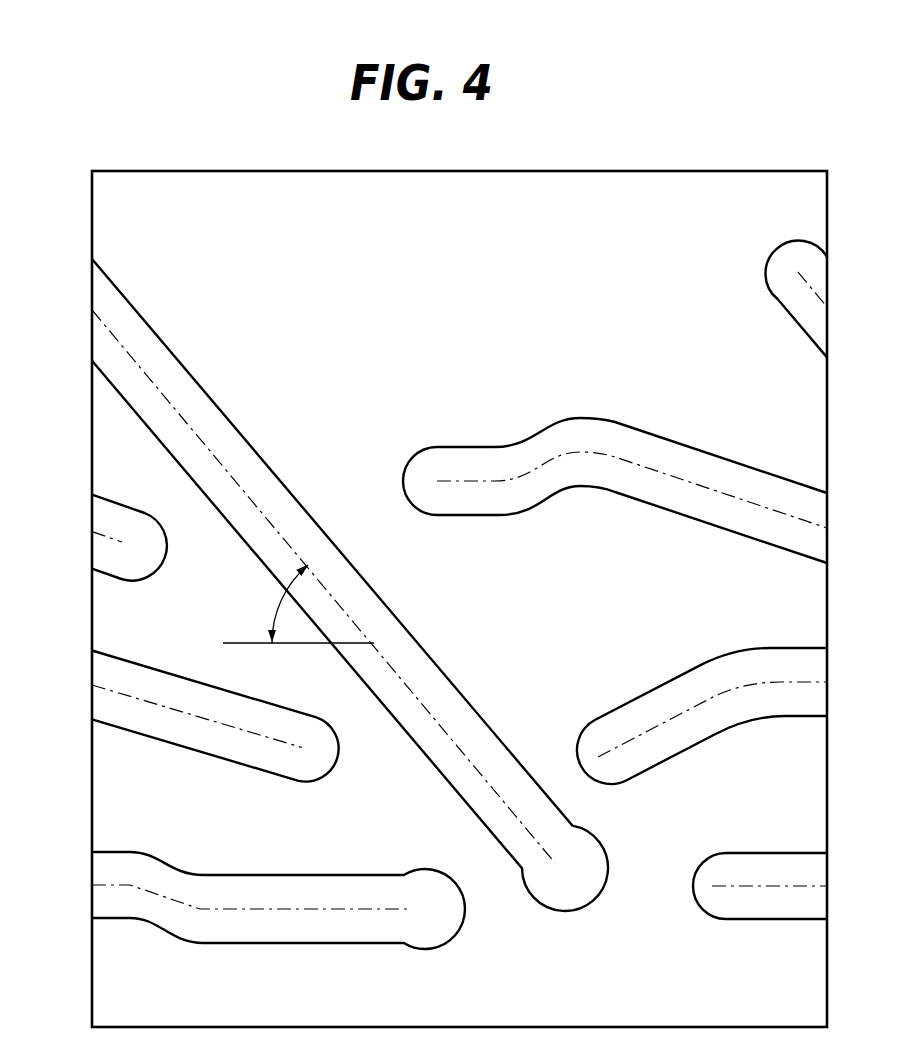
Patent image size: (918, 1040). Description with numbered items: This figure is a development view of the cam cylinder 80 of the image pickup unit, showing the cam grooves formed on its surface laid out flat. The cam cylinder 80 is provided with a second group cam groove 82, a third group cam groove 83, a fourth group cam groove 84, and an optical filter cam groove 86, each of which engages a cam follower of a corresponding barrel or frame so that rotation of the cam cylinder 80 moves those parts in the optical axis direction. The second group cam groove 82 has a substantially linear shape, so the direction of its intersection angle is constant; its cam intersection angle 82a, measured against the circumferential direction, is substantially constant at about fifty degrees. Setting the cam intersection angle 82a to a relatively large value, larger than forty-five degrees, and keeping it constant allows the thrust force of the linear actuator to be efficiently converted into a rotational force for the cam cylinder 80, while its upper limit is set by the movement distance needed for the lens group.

The cam cylinder 80 is at (92, 430).
The second group cam groove 82 is at (208, 394).
The cam intersection angle 82a is at (294, 604).
The third group cam groove 83 is at (478, 446).
The fourth group cam groove 84 is at (670, 764).
The optical filter cam groove 86 is at (298, 944).